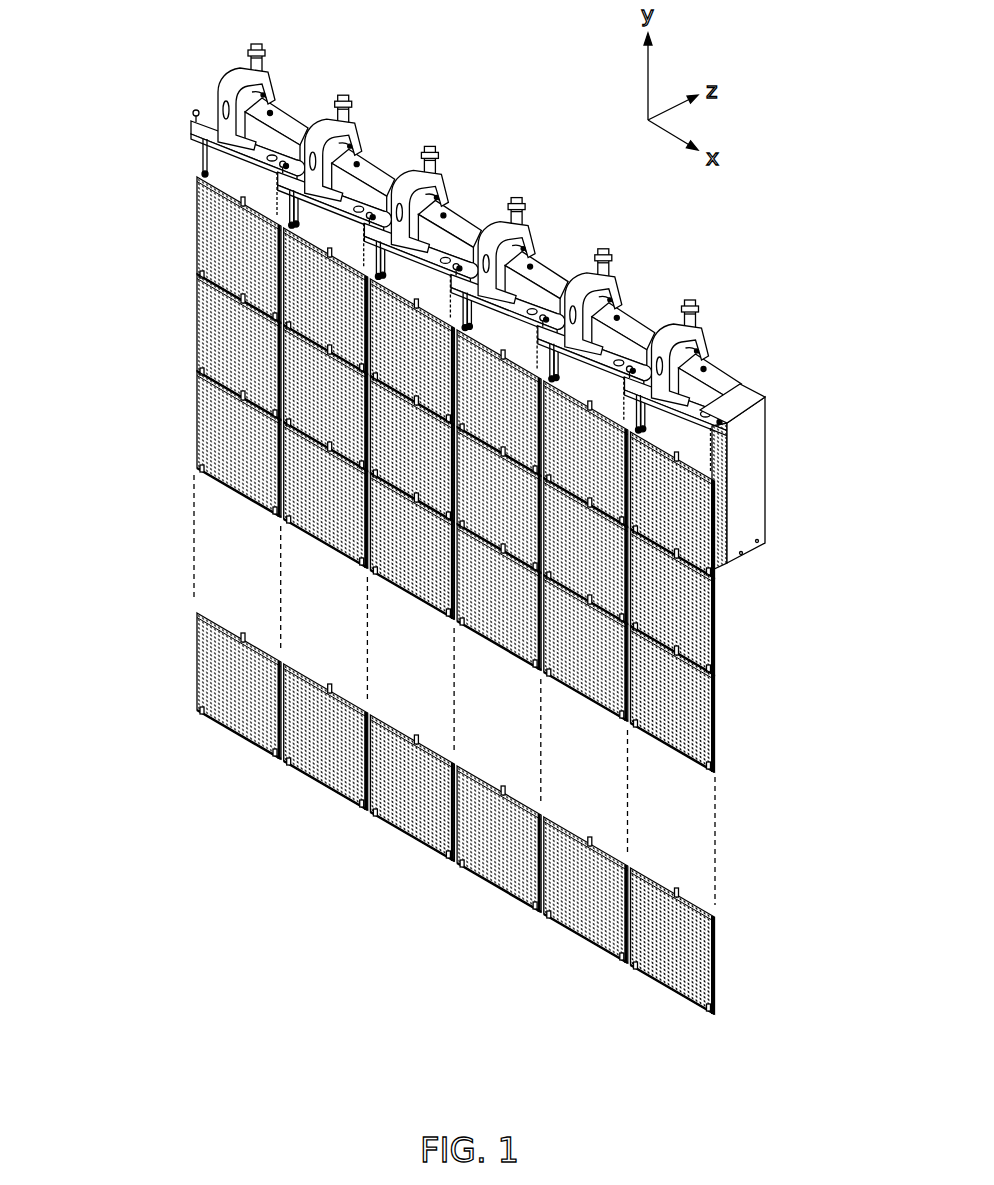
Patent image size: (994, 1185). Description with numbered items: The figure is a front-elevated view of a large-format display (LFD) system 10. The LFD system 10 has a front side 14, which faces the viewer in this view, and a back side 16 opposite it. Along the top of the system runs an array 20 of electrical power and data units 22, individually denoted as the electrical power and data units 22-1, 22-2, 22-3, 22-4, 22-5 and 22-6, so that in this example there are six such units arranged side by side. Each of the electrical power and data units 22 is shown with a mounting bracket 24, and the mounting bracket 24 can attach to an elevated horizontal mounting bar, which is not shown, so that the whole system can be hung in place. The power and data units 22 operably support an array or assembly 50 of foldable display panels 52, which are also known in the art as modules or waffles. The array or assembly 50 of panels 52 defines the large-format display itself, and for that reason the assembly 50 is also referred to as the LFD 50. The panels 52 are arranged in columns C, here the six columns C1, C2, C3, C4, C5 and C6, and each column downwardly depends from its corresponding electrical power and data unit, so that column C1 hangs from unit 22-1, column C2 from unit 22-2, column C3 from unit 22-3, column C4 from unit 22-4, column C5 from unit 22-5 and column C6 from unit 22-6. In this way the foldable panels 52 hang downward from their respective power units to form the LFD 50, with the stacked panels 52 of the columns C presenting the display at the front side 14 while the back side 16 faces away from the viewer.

The large-format display (LFD) system 10 is at (96, 76).
The front side 14 is at (167, 437).
The back side 16 is at (765, 672).
The array of electrical power and data units 20 is at (782, 432).
The electrical power and data unit 22 is at (755, 475).
The electrical power and data unit 22-1 is at (285, 130).
The electrical power and data unit 22-2 is at (288, 131).
The electrical power and data unit 22-3 is at (436, 237).
The electrical power and data unit 22-4 is at (522, 289).
The electrical power and data unit 22-5 is at (609, 340).
The electrical power and data unit 22-6 is at (696, 391).
The mounting bracket 24 is at (230, 88).
The array or assembly of foldable display panels 50 is at (167, 347).
The foldable display panel 52 is at (197, 240).
The column C is at (167, 736).
The column C1 is at (223, 760).
The column C2 is at (303, 808).
The column C3 is at (393, 858).
The column C4 is at (483, 908).
The column C5 is at (573, 958).
The column C6 is at (663, 1008).